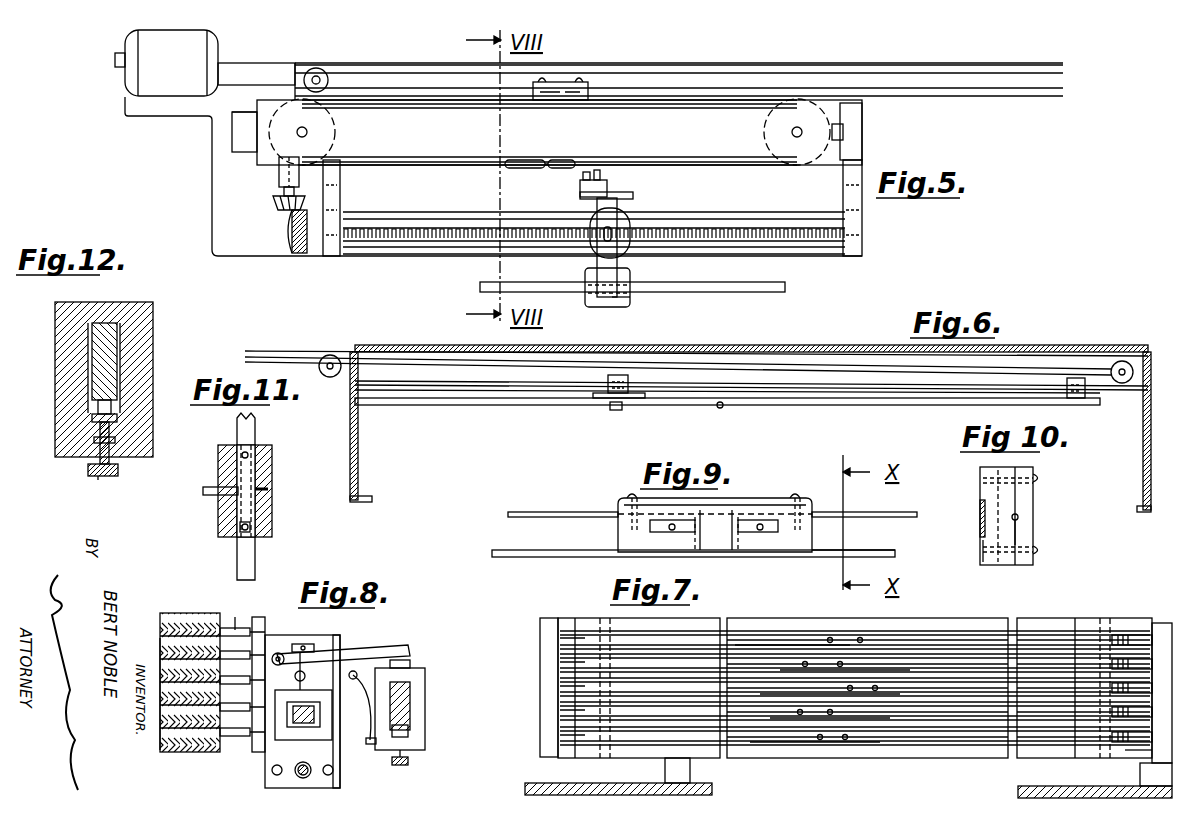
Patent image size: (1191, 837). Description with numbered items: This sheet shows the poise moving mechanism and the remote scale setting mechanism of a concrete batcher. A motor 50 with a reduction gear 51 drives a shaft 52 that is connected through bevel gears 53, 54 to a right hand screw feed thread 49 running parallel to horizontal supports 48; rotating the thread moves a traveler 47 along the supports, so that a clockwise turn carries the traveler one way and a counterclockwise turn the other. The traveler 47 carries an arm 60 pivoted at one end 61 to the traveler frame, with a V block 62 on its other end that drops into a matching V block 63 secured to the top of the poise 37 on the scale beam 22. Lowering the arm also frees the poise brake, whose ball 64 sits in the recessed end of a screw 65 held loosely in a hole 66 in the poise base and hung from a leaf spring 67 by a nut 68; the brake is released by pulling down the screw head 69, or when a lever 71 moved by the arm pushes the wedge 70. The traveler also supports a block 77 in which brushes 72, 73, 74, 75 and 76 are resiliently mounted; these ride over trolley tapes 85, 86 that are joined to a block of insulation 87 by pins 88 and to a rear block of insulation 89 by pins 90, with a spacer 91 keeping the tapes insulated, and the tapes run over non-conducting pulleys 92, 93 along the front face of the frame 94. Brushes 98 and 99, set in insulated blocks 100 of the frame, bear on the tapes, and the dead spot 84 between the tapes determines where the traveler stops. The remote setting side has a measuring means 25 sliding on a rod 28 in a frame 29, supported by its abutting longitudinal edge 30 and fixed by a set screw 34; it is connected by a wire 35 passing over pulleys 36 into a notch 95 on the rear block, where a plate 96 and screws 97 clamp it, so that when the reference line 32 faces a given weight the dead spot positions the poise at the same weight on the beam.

In FIG. 5, the scale beam 22 is at (718, 292).
In FIG. 8, the scale beam 22 is at (410, 697).
In FIG. 12, the scale beam 22 is at (110, 347).
In FIG. 11, the scale beam 22 is at (256, 552).
In FIG. 6, the measuring means 25 is at (855, 406).
In FIG. 6, the rod 28 is at (486, 390).
In FIG. 6, the frame 29 is at (358, 446).
In FIG. 6, the abutting longitudinal edge 30 is at (960, 408).
In FIG. 6, the reference line 32 is at (718, 408).
In FIG. 6, the set screw 34 is at (614, 410).
In FIG. 5, the wire 35 is at (1006, 74).
In FIG. 6, the wire 35 is at (812, 357).
In FIG. 9, the wire 35 is at (545, 512).
In FIG. 10, the wire 35 is at (1018, 519).
In FIG. 7, the wire 35 is at (812, 636).
In FIG. 5, the pulleys 36 is at (322, 70).
In FIG. 6, the pulleys 36 is at (1128, 363).
In FIG. 5, the poise 37 is at (614, 303).
In FIG. 8, the poise 37 is at (425, 721).
In FIG. 12, the poise 37 is at (55, 357).
In FIG. 11, the poise 37 is at (225, 512).
In FIG. 5, the traveler 47 is at (600, 260).
In FIG. 5, the horizontal supports 48 is at (455, 212).
In FIG. 8, the horizontal supports 48 is at (273, 774).
In FIG. 5, the screw feed thread 49 is at (790, 240).
In FIG. 8, the screw feed thread 49 is at (303, 778).
In FIG. 5, the motor 50 is at (181, 66).
In FIG. 5, the reduction gear 51 is at (276, 54).
In FIG. 5, the shaft 52 is at (278, 170).
In FIG. 5, the bevel gear 53 is at (275, 204).
In FIG. 5, the bevel gear 54 is at (295, 253).
In FIG. 5, the arm 60 is at (597, 220).
In FIG. 8, the arm 60 is at (348, 640).
In FIG. 5, the pivot end 61 is at (633, 196).
In FIG. 8, the pivot end 61 is at (300, 644).
In FIG. 5, the V block 62 is at (604, 300).
In FIG. 8, the V block 62 is at (410, 648).
In FIG. 8, the V block 63 is at (410, 663).
In FIG. 8, the ball 64 is at (408, 727).
In FIG. 12, the ball 64 is at (110, 410).
In FIG. 11, the ball 64 is at (272, 520).
In FIG. 8, the screw 65 is at (408, 760).
In FIG. 12, the screw 65 is at (118, 468).
In FIG. 12, the hole 66 is at (96, 455).
In FIG. 12, the leaf spring 67 is at (112, 437).
In FIG. 11, the leaf spring 67 is at (272, 503).
In FIG. 12, the nut 68 is at (92, 420).
In FIG. 8, the screw head 69 is at (400, 765).
In FIG. 12, the screw head 69 is at (108, 478).
In FIG. 8, the wedge 70 is at (372, 745).
In FIG. 11, the wedge 70 is at (210, 494).
In FIG. 8, the lever 71 is at (362, 735).
In FIG. 8, the brush 72 is at (255, 745).
In FIG. 8, the brush 73 is at (300, 735).
In FIG. 8, the brush 74 is at (295, 676).
In FIG. 8, the brush 75 is at (279, 652).
In FIG. 5, the brush 76 is at (599, 178).
In FIG. 8, the brush 76 is at (240, 627).
In FIG. 5, the block 77 is at (610, 186).
In FIG. 8, the block 77 is at (262, 617).
In FIG. 5, the dead spot 84 is at (537, 160).
In FIG. 5, the trolley tape 85 is at (455, 160).
In FIG. 9, the trolley tape 85 is at (546, 557).
In FIG. 7, the trolley tape 85 is at (1030, 640).
In FIG. 8, the trolley tape 85 is at (230, 740).
In FIG. 5, the trolley tape 86 is at (735, 162).
In FIG. 9, the trolley tape 86 is at (885, 550).
In FIG. 10, the trolley tape 86 is at (980, 519).
In FIG. 7, the trolley tape 86 is at (718, 632).
In FIG. 8, the trolley tape 86 is at (165, 735).
In FIG. 5, the block of insulation 87 is at (560, 160).
In FIG. 5, the pins 88 is at (560, 163).
In FIG. 5, the block of insulation 89 is at (588, 96).
In FIG. 9, the block of insulation 89 is at (800, 536).
In FIG. 10, the block of insulation 89 is at (992, 545).
In FIG. 9, the pins 90 is at (668, 535).
In FIG. 9, the spacer 91 is at (725, 545).
In FIG. 5, the pulley 92 is at (772, 123).
In FIG. 7, the pulley 92 is at (586, 624).
In FIG. 5, the pulley 93 is at (337, 125).
In FIG. 7, the pulley 93 is at (1085, 633).
In FIG. 5, the frame 94 is at (690, 136).
In FIG. 7, the frame 94 is at (1130, 622).
In FIG. 8, the frame 94 is at (210, 616).
In FIG. 9, the notch 95 is at (703, 550).
In FIG. 10, the notch 95 is at (1018, 516).
In FIG. 9, the plate 96 is at (720, 505).
In FIG. 10, the plate 96 is at (1030, 500).
In FIG. 7, the plate 96 is at (850, 630).
In FIG. 9, the screws 97 is at (632, 497).
In FIG. 10, the screws 97 is at (1040, 477).
In FIG. 5, the brush 98 is at (257, 130).
In FIG. 7, the brush 98 is at (1140, 750).
In FIG. 5, the brush 99 is at (840, 136).
In FIG. 7, the brush 99 is at (565, 638).
In FIG. 5, the insulated blocks 100 is at (237, 144).
In FIG. 7, the insulated blocks 100 is at (540, 672).